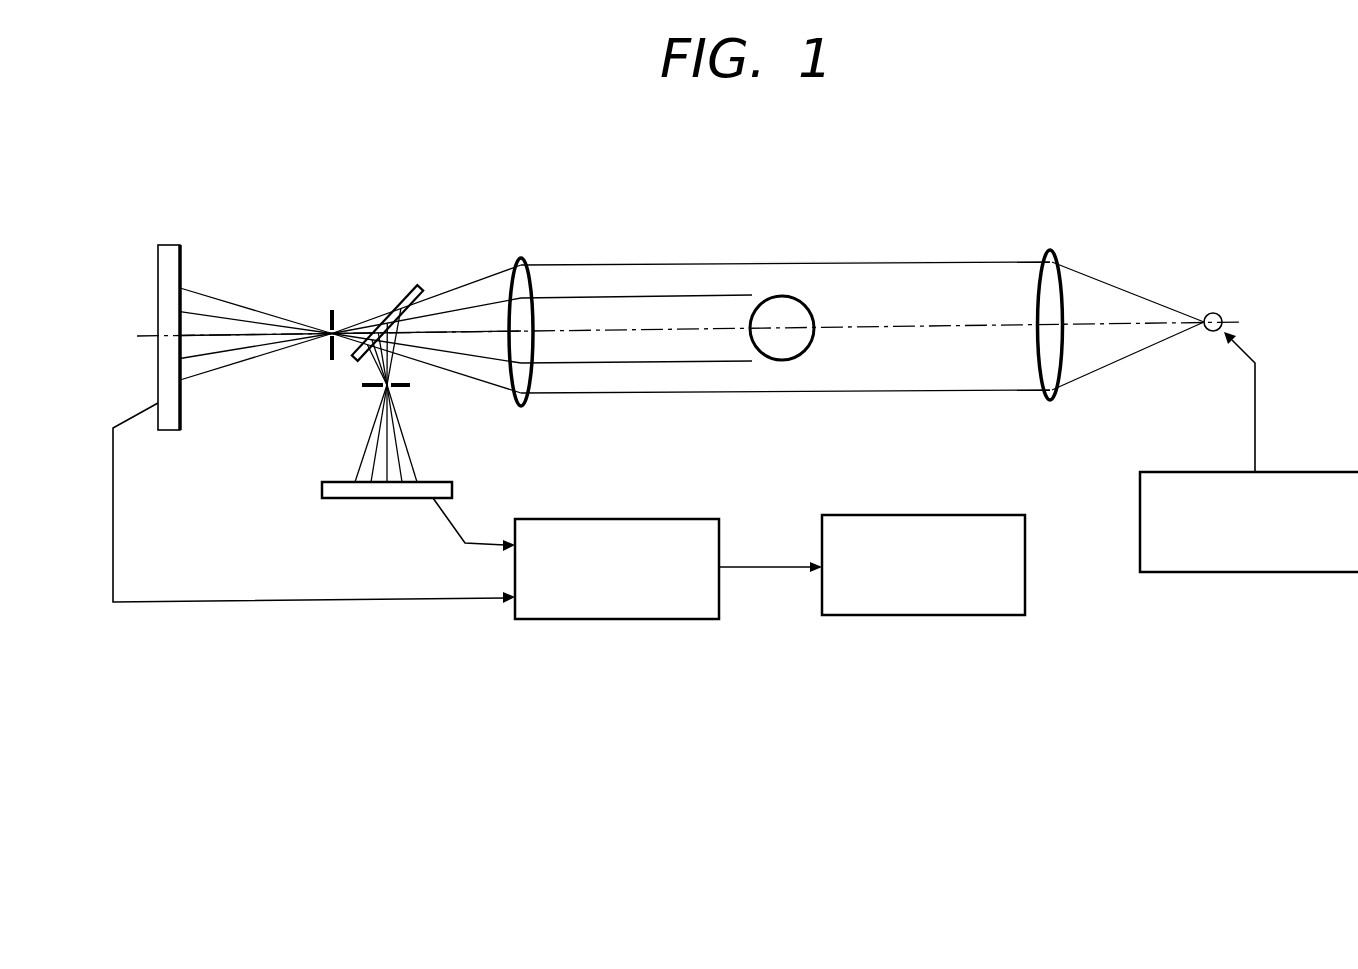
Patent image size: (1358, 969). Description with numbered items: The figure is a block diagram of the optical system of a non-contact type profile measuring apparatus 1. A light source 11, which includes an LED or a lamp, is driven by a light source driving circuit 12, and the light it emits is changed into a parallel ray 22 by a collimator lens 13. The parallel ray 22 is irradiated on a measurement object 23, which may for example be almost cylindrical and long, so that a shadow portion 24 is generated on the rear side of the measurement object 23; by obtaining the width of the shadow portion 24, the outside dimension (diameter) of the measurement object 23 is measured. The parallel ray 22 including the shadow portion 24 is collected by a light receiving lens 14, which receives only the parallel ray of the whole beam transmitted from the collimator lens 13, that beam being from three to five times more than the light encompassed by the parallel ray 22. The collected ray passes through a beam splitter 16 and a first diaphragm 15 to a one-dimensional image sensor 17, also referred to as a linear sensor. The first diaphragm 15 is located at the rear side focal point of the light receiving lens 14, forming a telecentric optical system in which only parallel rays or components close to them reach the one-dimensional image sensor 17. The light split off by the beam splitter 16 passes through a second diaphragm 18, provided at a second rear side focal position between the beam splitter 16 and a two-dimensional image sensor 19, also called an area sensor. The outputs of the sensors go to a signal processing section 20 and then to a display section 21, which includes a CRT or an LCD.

The non-contact type profile measuring apparatus 1 is at (1164, 190).
The light source 11 is at (1218, 313).
The light source driving circuit 12 is at (1310, 472).
The collimator lens 13 is at (1052, 250).
The light receiving lens 14 is at (521, 258).
The first diaphragm 15 is at (334, 310).
The beam splitter 16 is at (412, 291).
The one-dimensional image sensor 17 is at (167, 246).
The second diaphragm 18 is at (369, 388).
The two-dimensional image sensor 19 is at (432, 482).
The signal processing section 20 is at (660, 519).
The display section 21 is at (972, 515).
The parallel ray 22 is at (955, 276).
The measurement object 23 is at (802, 303).
The shadow portion 24 is at (667, 311).